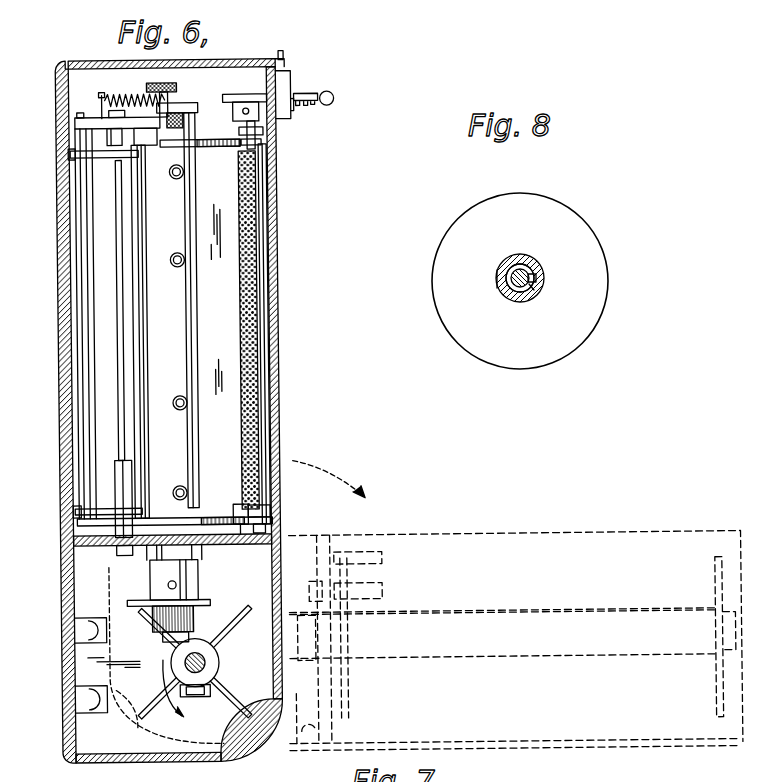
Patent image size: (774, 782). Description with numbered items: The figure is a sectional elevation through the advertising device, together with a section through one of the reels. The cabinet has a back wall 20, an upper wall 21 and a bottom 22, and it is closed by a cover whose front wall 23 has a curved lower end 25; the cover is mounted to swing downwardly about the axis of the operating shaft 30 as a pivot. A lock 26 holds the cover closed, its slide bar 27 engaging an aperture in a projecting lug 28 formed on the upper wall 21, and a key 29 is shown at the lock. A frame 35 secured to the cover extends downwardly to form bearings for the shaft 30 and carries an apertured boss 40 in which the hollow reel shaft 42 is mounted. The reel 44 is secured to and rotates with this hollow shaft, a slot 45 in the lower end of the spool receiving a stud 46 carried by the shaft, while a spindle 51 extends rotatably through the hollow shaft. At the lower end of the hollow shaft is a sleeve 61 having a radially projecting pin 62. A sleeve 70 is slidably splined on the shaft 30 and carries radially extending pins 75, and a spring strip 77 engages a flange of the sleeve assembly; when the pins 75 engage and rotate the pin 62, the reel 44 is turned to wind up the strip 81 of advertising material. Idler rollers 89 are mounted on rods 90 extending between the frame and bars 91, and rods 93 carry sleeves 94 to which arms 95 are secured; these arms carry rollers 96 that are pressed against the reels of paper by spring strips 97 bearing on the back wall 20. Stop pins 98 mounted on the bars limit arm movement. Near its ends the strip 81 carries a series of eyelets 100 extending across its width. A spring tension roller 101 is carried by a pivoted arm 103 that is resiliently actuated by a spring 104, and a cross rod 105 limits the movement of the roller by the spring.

In FIG. 6, the back wall 20 is at (59, 452).
In FIG. 6, the upper wall 21 is at (234, 62).
In FIG. 6, the bottom 22 is at (144, 762).
In FIG. 6, the front wall 23 is at (280, 292).
In FIG. 6, the curved lower end 25 is at (252, 738).
In FIG. 6, the lock 26 is at (292, 86).
In FIG. 6, the slide bar 27 is at (286, 55).
In FIG. 6, the projecting lug 28 is at (290, 62).
In FIG. 6, the key 29 is at (337, 100).
In FIG. 6, the operating shaft 30 is at (202, 667).
In FIG. 6, the frame 35 is at (84, 545).
In FIG. 6, the apertured boss 40 is at (146, 562).
In FIG. 8, the hollow reel shaft 42 is at (538, 268).
In FIG. 6, the reel 44 is at (648, 619).
In FIG. 8, the reel 44 is at (518, 288).
In FIG. 8, the slot 45 is at (535, 290).
In FIG. 8, the stud 46 is at (537, 275).
In FIG. 8, the spindle 51 is at (497, 288).
In FIG. 6, the sleeve 61 is at (196, 590).
In FIG. 6, the pin 62 is at (134, 603).
In FIG. 6, the sleeve 70 is at (212, 700).
In FIG. 6, the pin 75 is at (150, 620).
In FIG. 6, the spring strip 77 is at (188, 697).
In FIG. 6, the strip 81 is at (221, 334).
In FIG. 8, the strip 81 is at (413, 243).
In FIG. 6, the idler roller 89 is at (146, 142).
In FIG. 6, the rod 90 is at (130, 135).
In FIG. 6, the bar 91 is at (82, 118).
In FIG. 6, the rod 93 is at (76, 521).
In FIG. 6, the sleeve 94 is at (82, 346).
In FIG. 6, the arm 95 is at (100, 158).
In FIG. 6, the roller 96 is at (124, 412).
In FIG. 6, the spring strip 97 is at (71, 152).
In FIG. 6, the stop pin 98 is at (172, 116).
In FIG. 6, the eyelet 100 is at (187, 172).
In FIG. 6, the spring tension roller 101 is at (250, 421).
In FIG. 6, the pivoted arm 103 is at (268, 122).
In FIG. 6, the spring 104 is at (253, 107).
In FIG. 6, the cross rod 105 is at (268, 357).